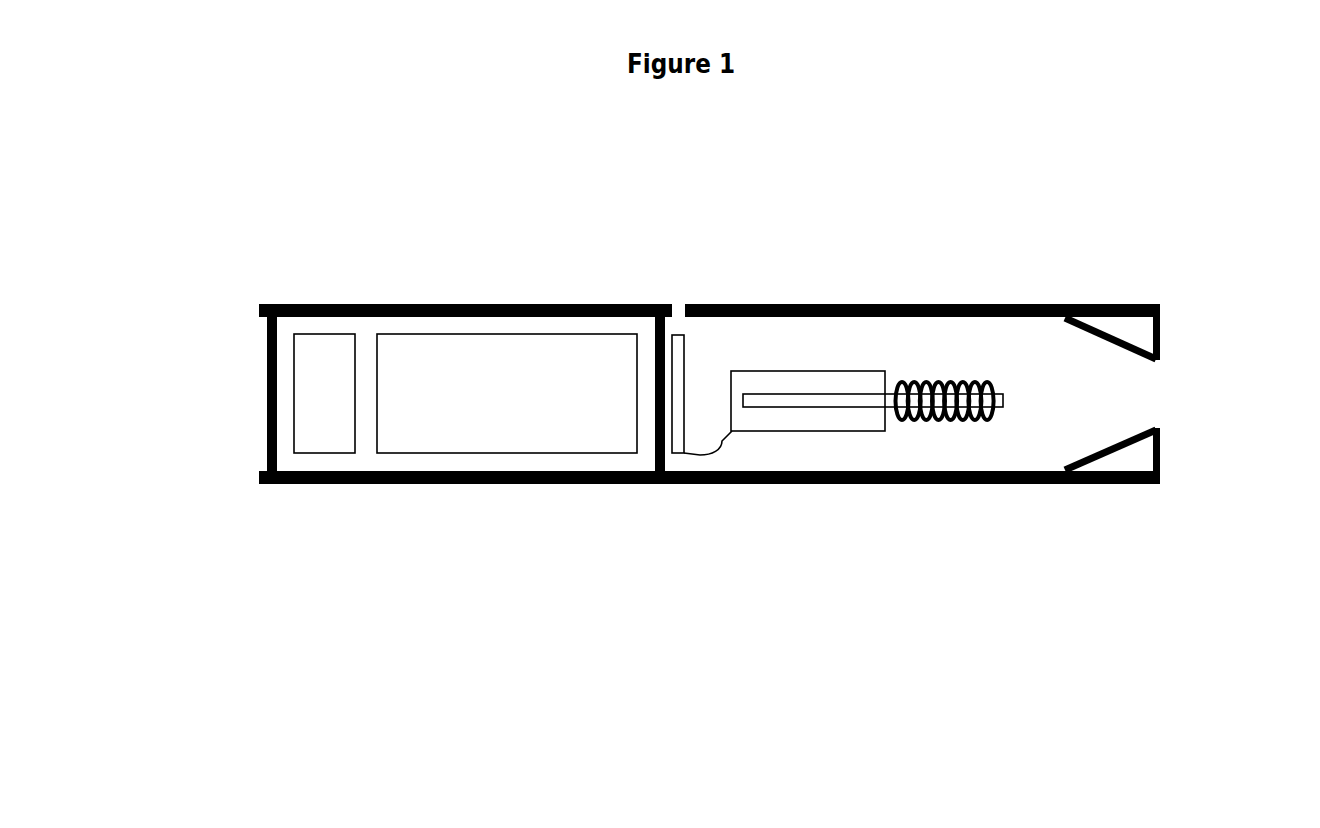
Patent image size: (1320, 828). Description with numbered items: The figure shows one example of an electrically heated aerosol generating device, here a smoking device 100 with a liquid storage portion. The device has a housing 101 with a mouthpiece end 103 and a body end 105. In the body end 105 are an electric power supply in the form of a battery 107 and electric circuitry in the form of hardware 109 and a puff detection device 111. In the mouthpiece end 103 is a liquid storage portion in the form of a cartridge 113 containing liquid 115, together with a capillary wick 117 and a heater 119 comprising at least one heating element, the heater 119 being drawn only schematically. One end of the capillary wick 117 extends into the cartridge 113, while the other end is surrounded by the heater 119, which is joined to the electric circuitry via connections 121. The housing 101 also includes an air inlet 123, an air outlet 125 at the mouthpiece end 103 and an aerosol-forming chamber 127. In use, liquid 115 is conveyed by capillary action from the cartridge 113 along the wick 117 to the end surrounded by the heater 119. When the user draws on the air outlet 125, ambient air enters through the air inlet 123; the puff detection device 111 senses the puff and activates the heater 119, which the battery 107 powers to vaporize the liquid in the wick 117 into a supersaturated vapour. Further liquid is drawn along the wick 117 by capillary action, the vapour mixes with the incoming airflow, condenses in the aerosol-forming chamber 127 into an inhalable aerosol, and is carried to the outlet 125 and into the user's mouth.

The smoking device 100 is at (212, 291).
The housing 101 is at (458, 303).
The mouthpiece end 103 is at (1125, 564).
The body end 105 is at (387, 562).
The battery 107 is at (508, 430).
The hardware 109 is at (319, 430).
The puff detection device 111 is at (703, 343).
The cartridge 113 is at (812, 431).
The liquid 115 is at (808, 370).
The capillary wick 117 is at (1000, 407).
The heater 119 is at (942, 446).
The connections 121 is at (721, 443).
The air inlet 123 is at (669, 288).
The air outlet 125 is at (1182, 400).
The aerosol-forming chamber 127 is at (984, 336).